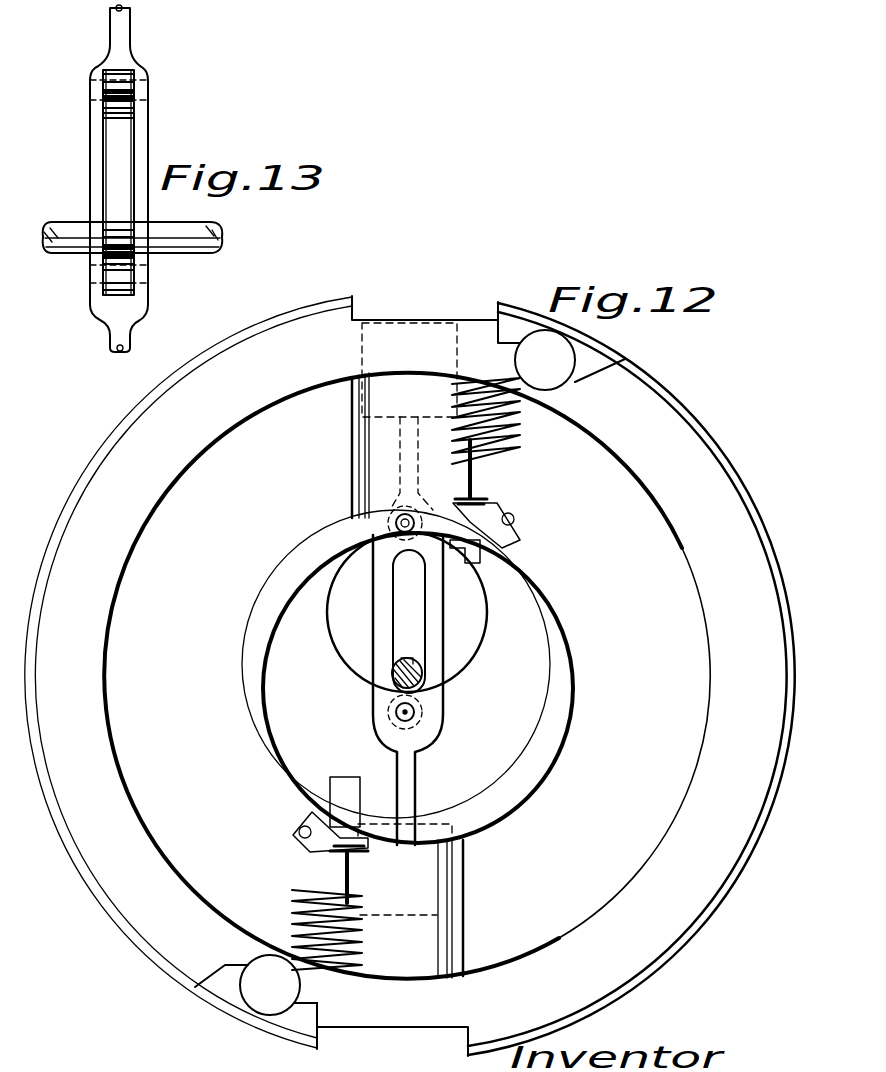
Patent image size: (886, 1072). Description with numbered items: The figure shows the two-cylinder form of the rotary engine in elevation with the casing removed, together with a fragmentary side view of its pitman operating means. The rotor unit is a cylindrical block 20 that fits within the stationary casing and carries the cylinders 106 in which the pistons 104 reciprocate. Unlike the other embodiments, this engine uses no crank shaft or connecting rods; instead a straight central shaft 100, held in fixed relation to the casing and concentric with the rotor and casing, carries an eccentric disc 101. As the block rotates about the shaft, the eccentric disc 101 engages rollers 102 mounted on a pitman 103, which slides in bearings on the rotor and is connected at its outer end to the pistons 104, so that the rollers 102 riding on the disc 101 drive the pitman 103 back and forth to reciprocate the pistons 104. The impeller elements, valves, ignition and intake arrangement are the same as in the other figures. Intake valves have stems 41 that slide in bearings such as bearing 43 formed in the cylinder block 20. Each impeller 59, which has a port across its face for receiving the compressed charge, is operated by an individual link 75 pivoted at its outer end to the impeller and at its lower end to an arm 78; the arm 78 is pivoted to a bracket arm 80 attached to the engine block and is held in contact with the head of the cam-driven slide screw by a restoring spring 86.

In FIG. 12, the cylindrical block 20 is at (410, 676).
In FIG. 12, the valve stem 41 is at (467, 468).
In FIG. 12, the bearing 43 is at (476, 565).
In FIG. 12, the impeller 59 is at (563, 366).
In FIG. 12, the link 75 is at (500, 465).
In FIG. 12, the arm 78 is at (505, 492).
In FIG. 12, the bracket arm 80 is at (514, 521).
In FIG. 12, the restoring spring 86 is at (516, 430).
In FIG. 13, the central shaft 100 is at (197, 228).
In FIG. 12, the central shaft 100 is at (415, 678).
In FIG. 13, the eccentric disc 101 is at (128, 128).
In FIG. 12, the eccentric disc 101 is at (485, 618).
In FIG. 13, the roller 102 is at (128, 88).
In FIG. 12, the roller 102 is at (413, 718).
In FIG. 13, the pitman 103 is at (130, 320).
In FIG. 12, the pitman 103 is at (395, 748).
In FIG. 12, the piston 104 is at (362, 420).
In FIG. 12, the cylinder 106 is at (350, 470).